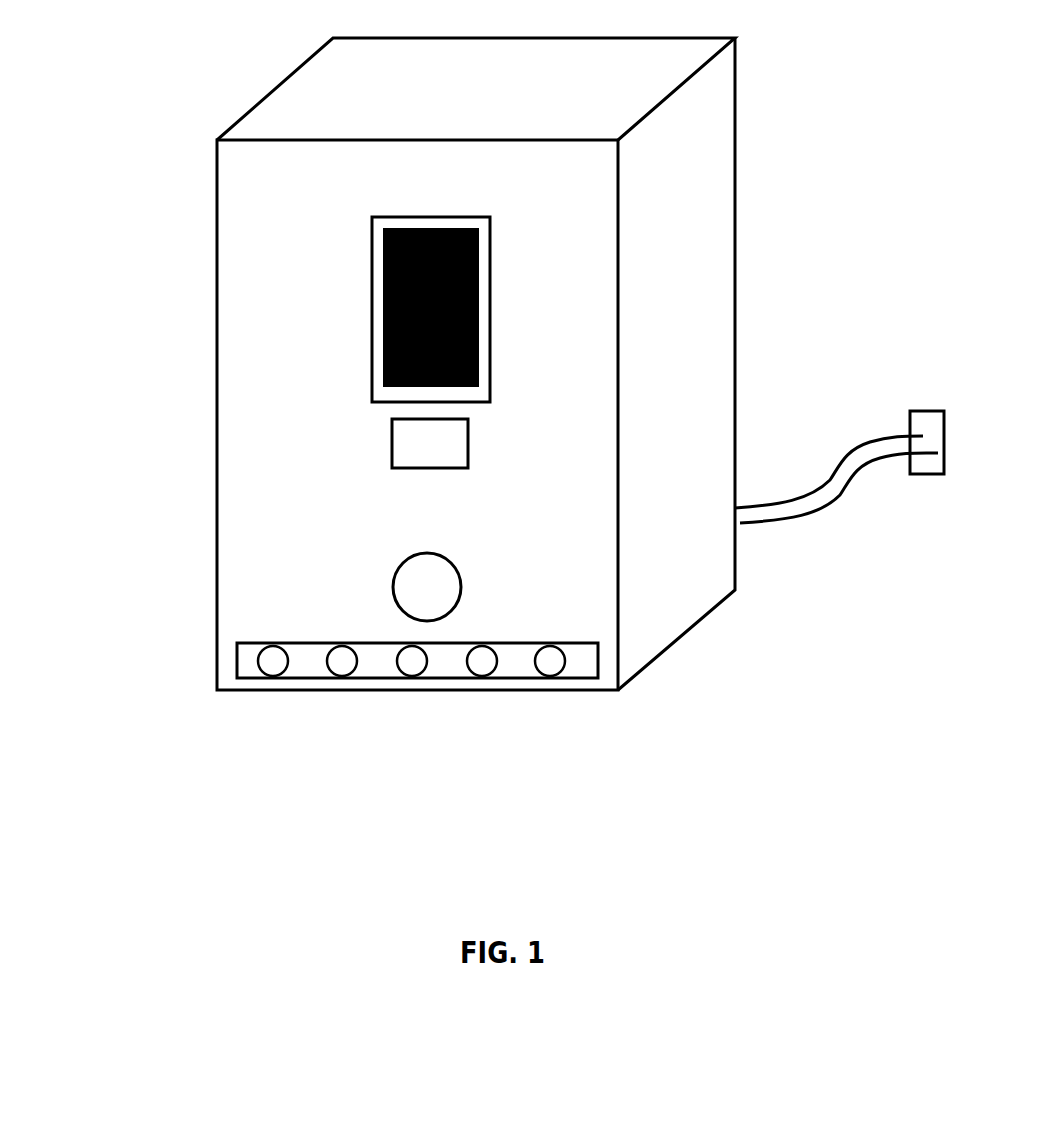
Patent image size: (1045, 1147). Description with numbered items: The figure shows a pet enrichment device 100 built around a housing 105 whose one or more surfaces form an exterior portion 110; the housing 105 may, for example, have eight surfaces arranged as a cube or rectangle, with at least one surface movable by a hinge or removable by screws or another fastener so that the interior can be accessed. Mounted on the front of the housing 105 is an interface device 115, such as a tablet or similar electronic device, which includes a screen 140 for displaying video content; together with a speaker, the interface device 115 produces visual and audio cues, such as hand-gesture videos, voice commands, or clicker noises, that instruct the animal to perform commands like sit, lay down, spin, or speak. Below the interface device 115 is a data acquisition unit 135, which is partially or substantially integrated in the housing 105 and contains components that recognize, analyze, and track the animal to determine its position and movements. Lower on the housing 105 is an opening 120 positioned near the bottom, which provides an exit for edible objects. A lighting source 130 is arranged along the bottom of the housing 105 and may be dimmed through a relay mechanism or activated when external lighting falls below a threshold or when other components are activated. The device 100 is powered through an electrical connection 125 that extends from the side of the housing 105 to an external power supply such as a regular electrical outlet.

The pet enrichment device 100 is at (128, 90).
The housing 105 is at (258, 198).
The exterior portion 110 is at (748, 257).
The interface device 115 is at (492, 275).
The opening 120 is at (427, 587).
The electrical connection 125 is at (837, 467).
The lighting source 130 is at (598, 666).
The data acquisition unit 135 is at (392, 447).
The screen 140 is at (482, 238).